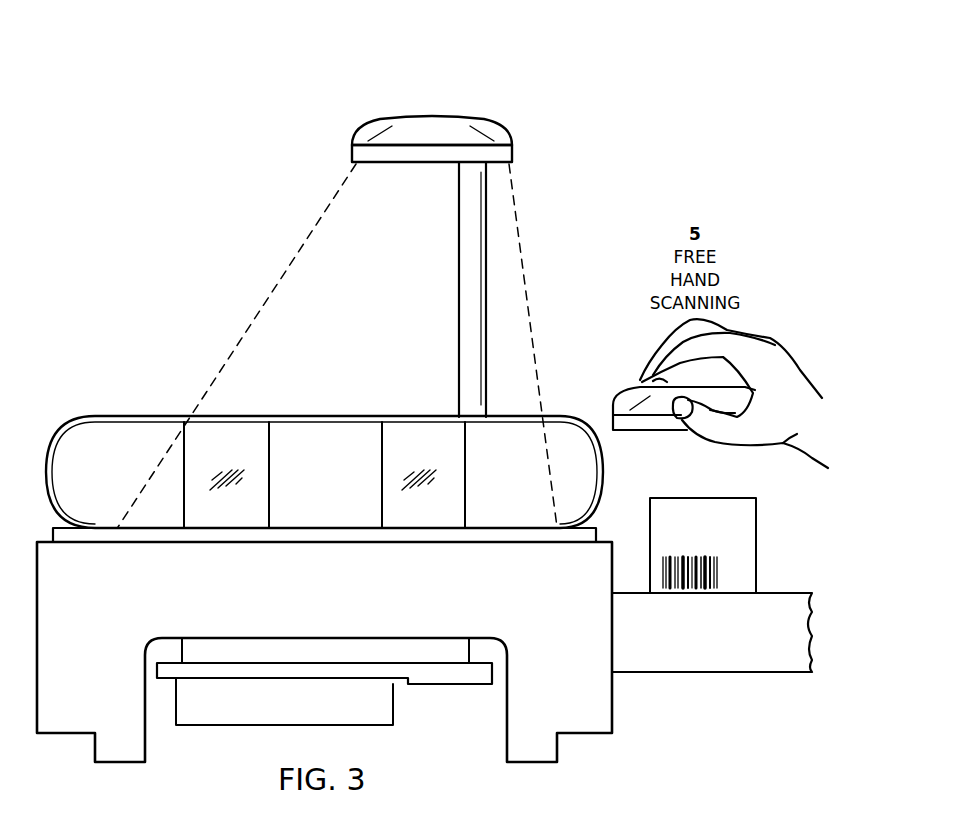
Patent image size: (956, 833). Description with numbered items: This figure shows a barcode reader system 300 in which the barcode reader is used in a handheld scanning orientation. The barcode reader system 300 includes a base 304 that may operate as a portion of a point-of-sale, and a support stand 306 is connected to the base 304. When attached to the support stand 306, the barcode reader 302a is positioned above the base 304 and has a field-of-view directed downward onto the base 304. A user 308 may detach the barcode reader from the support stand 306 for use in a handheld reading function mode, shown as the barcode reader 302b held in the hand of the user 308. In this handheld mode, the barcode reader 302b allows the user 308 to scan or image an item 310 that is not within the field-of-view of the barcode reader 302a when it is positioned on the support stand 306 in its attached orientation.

The barcode reader system 300 is at (208, 66).
The barcode reader 302a is at (447, 117).
The barcode reader 302b is at (665, 431).
The base 304 is at (612, 693).
The support stand 306 is at (459, 266).
The user 308 is at (775, 347).
The item 310 is at (756, 548).